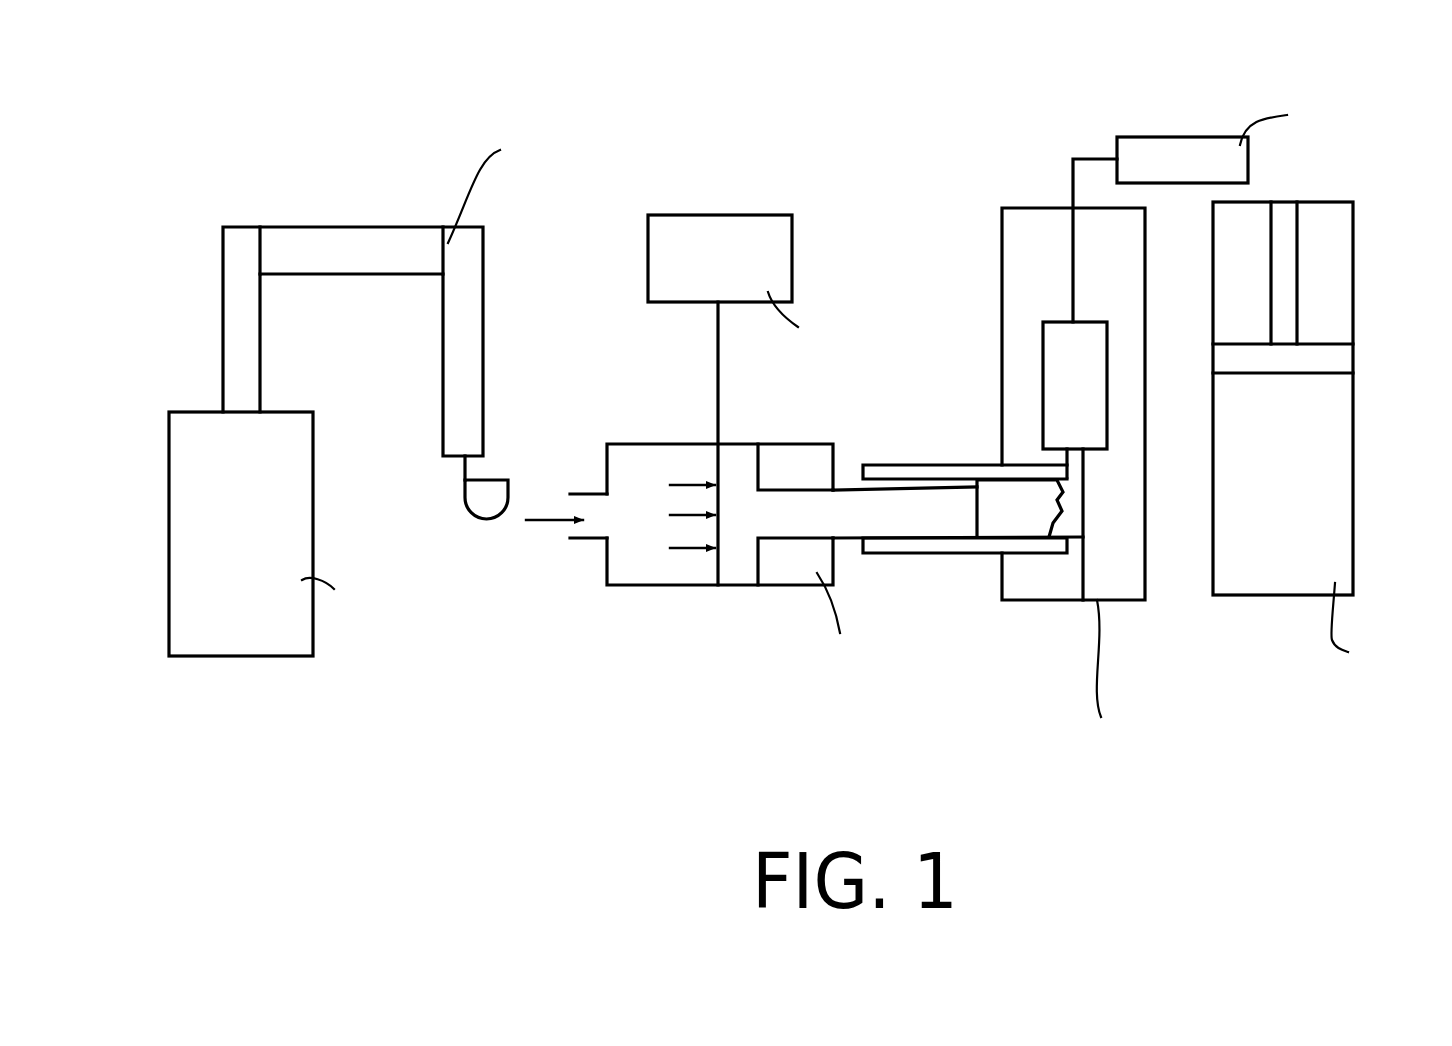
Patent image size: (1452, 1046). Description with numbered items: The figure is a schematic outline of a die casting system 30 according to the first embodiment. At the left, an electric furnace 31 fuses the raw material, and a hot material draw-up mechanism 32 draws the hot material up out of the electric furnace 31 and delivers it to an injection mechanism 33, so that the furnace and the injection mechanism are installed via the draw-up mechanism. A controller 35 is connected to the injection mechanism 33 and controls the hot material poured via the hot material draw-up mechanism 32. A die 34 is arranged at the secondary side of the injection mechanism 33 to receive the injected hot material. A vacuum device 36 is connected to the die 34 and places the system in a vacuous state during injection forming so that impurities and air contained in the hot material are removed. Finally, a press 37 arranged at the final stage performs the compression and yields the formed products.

The die casting system 30 is at (795, 73).
The electric furnace 31 is at (237, 656).
The hot material draw-up mechanism 32 is at (368, 227).
The injection mechanism 33 is at (797, 585).
The die 34 is at (1117, 600).
The controller 35 is at (728, 215).
The vacuum device 36 is at (1188, 137).
The press 37 is at (1290, 595).